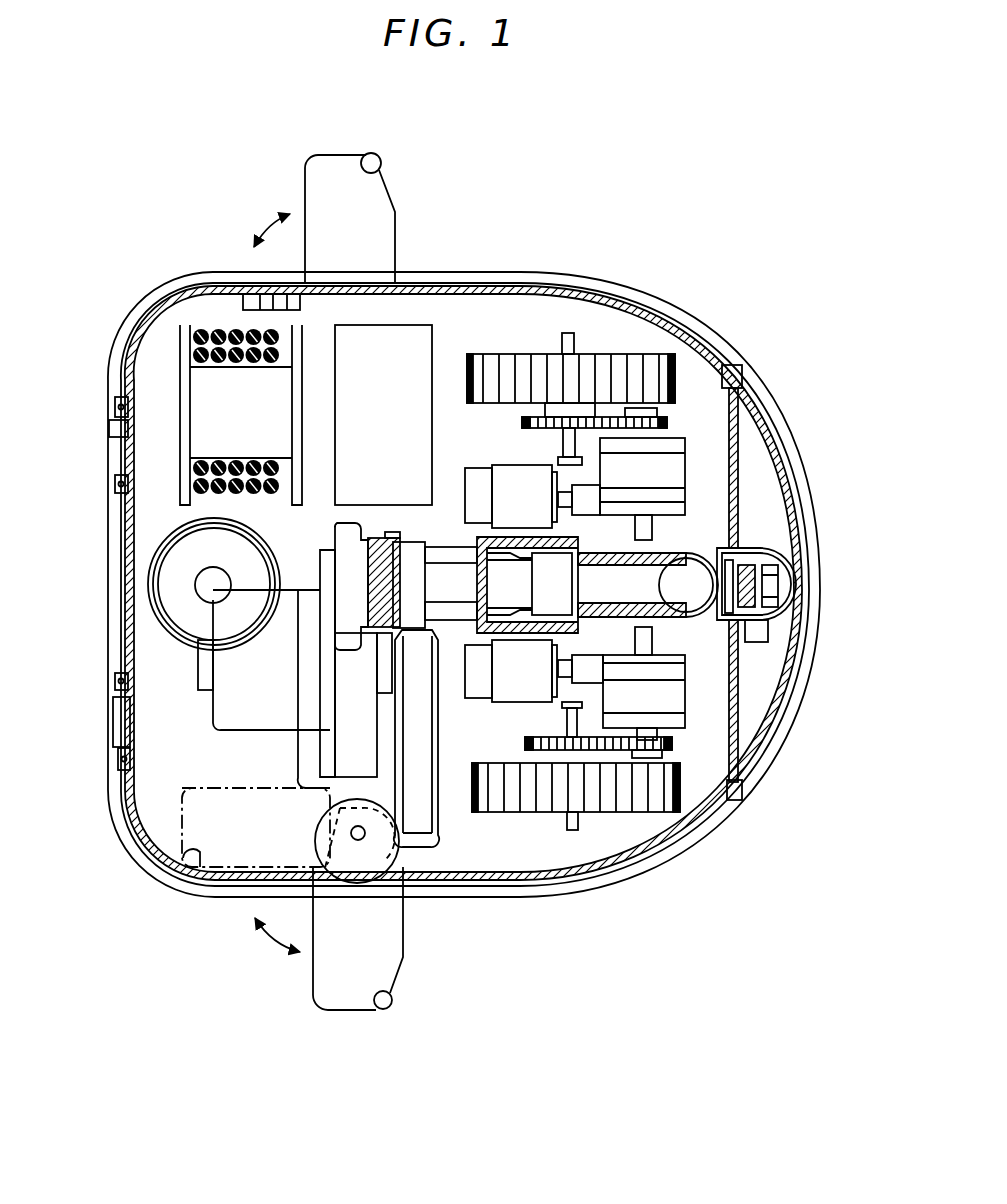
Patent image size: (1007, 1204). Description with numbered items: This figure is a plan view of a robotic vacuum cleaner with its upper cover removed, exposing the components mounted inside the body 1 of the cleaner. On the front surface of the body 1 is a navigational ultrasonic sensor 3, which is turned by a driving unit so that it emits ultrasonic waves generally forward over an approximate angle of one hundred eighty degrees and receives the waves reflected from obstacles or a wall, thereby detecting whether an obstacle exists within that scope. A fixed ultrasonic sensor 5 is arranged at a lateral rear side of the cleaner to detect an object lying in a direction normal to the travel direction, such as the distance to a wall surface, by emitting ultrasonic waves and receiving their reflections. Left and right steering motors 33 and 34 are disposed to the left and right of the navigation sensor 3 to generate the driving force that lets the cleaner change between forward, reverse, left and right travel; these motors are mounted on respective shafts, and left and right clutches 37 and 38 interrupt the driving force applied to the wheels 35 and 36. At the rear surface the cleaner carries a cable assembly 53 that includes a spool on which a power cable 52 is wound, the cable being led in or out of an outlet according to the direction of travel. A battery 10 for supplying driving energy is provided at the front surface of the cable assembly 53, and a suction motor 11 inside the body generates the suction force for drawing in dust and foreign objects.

The body of the robotic vacuum cleaner 1 is at (730, 328).
The navigational ultrasonic sensor 3 is at (784, 587).
The fixed ultrasonic sensor 5 is at (235, 290).
The battery 10 is at (400, 323).
The suction motor 11 is at (245, 713).
The left steering motor 33 is at (502, 468).
The right steering motor 34 is at (480, 695).
The left wheel 35 is at (633, 358).
The right wheel 36 is at (647, 800).
The left clutch 37 is at (673, 443).
The right clutch 38 is at (673, 697).
The power cable 52 is at (215, 332).
The cable assembly 53 is at (182, 433).